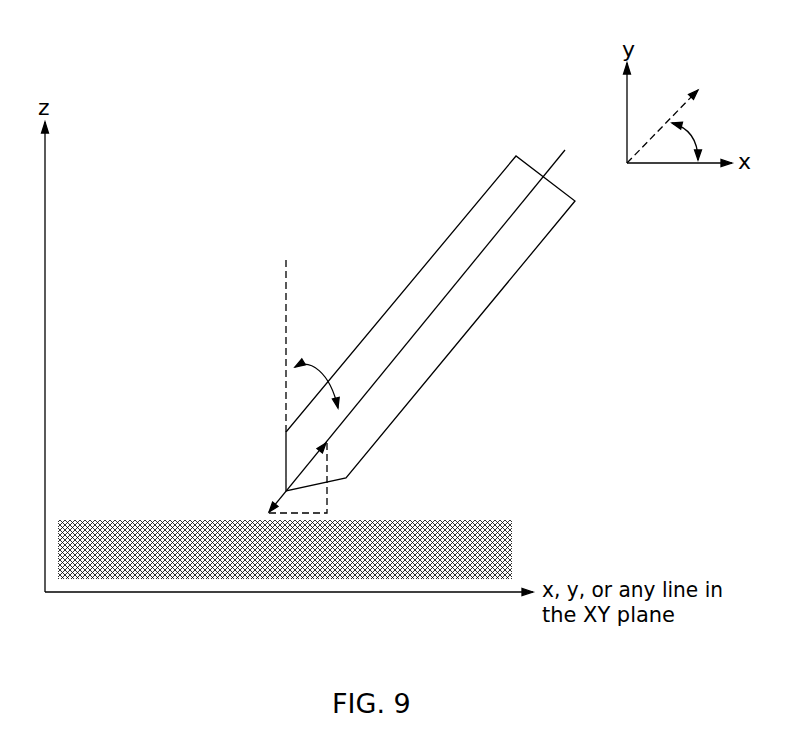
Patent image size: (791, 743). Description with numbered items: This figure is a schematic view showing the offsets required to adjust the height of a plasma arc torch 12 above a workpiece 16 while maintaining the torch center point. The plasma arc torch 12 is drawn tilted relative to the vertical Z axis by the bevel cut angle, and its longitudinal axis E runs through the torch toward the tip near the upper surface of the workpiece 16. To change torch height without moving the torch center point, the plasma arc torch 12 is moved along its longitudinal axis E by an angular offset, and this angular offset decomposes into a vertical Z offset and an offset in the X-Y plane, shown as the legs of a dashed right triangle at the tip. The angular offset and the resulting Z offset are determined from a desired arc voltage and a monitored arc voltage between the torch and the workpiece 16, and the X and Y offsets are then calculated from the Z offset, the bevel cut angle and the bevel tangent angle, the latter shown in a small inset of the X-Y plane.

The plasma arc torch 12 is at (510, 280).
The workpiece 16 is at (118, 525).
The longitudinal axis E is at (428, 322).